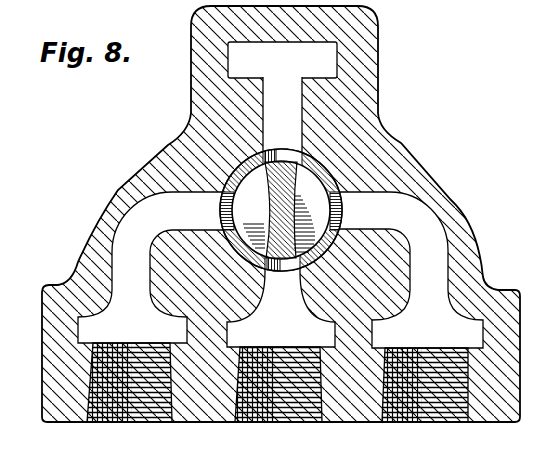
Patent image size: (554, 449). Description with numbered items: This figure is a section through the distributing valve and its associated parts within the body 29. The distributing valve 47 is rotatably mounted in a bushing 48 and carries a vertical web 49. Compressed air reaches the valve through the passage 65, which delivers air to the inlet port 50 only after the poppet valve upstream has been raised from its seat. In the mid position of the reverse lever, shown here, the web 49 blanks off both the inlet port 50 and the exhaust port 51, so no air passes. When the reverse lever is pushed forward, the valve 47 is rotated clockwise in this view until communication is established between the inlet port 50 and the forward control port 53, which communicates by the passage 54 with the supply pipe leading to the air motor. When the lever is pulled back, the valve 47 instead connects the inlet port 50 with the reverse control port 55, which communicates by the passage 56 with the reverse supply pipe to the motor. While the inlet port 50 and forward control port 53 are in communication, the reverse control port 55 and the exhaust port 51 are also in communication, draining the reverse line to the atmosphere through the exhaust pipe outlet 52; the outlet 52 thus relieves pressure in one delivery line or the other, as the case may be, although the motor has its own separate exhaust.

The body 29 is at (401, 143).
The passage 65 is at (282, 60).
The inlet port 50 is at (289, 149).
The exhaust port 51 is at (281, 303).
The distributing valve 47 is at (282, 210).
The bushing 48 is at (308, 221).
The vertical web 49 is at (271, 223).
The forward control port 53 is at (220, 212).
The reverse control port 55 is at (345, 212).
The passage 54 is at (129, 368).
The passage 56 is at (425, 371).
The exhaust pipe outlet 52 is at (274, 423).